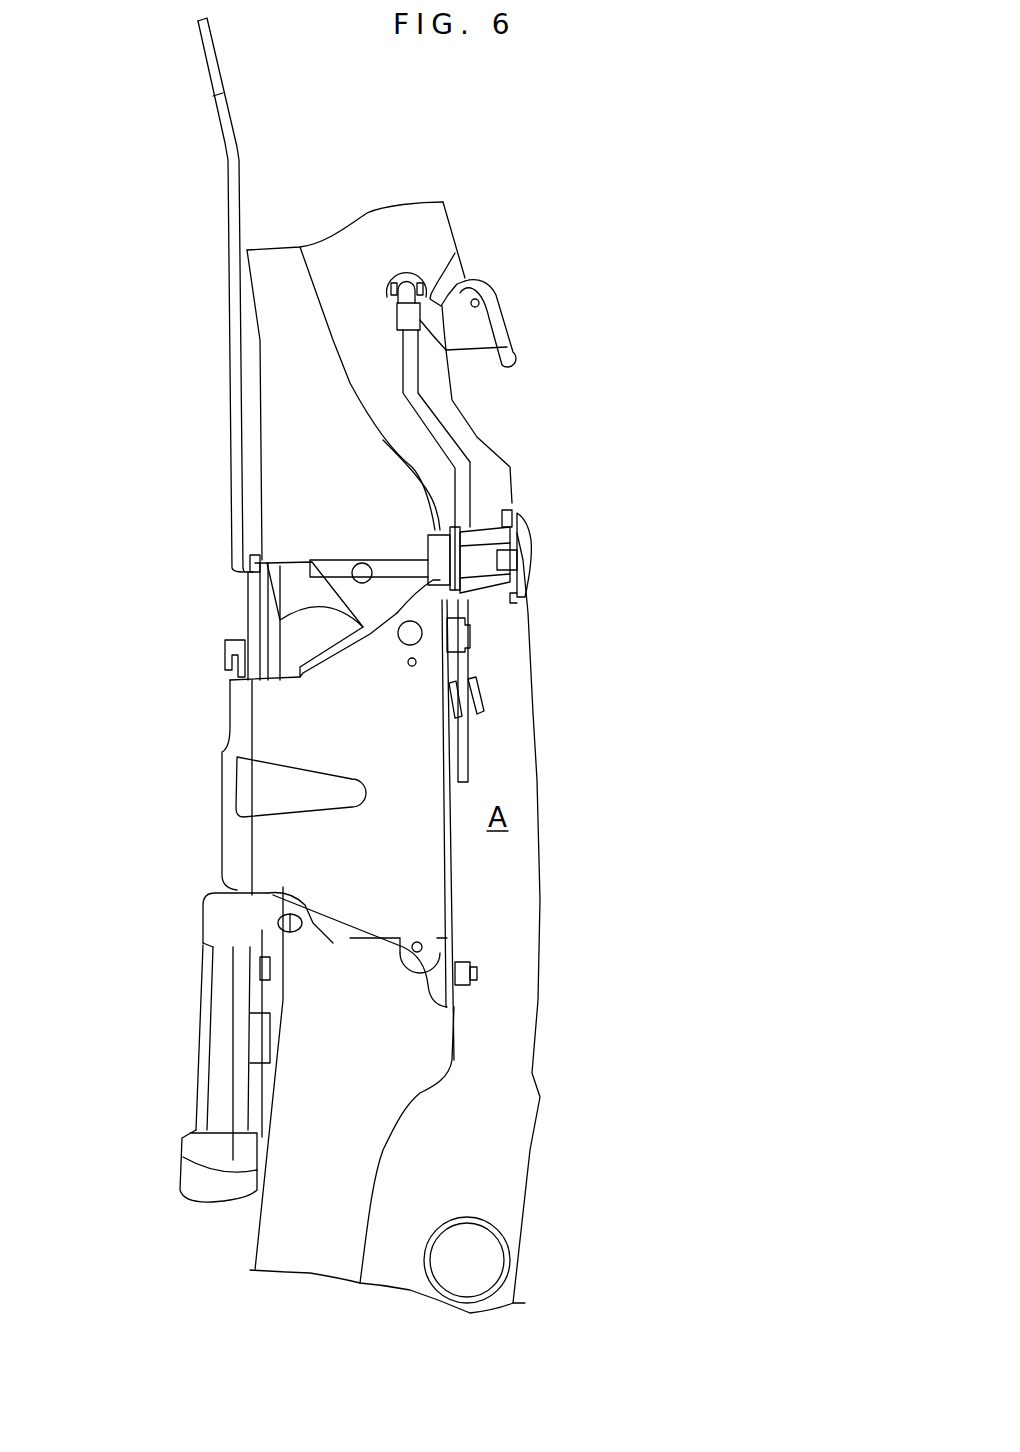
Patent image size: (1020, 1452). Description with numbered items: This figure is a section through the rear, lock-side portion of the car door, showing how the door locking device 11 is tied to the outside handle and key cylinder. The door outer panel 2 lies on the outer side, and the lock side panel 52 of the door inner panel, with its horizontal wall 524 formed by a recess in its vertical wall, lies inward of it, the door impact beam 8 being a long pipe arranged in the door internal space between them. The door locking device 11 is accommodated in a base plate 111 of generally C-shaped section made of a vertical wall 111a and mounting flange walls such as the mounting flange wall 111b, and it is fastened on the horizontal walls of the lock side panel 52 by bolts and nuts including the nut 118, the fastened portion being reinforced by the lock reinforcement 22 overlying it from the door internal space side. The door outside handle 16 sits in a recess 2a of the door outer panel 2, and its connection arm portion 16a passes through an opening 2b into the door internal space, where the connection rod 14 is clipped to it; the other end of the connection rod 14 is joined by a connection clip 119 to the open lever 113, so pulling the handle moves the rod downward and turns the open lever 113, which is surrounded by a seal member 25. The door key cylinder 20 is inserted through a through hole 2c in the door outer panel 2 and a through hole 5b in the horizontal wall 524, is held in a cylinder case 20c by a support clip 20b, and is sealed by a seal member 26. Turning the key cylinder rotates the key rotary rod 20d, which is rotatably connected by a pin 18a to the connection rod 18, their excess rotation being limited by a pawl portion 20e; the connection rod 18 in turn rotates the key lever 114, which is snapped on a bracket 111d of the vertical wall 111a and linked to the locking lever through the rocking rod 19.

The door outer panel 2 is at (541, 803).
The recess 2a is at (487, 440).
The opening 2b is at (507, 347).
The through hole 2c is at (483, 547).
The through hole 5b is at (397, 613).
The door impact beam 8 is at (505, 1258).
The door locking device 11 is at (269, 1064).
The connection rod 14 is at (438, 433).
The door outside handle 16 is at (507, 316).
The connection arm portion 16a is at (455, 253).
The connection rod 18 is at (285, 550).
The pin 18a is at (327, 568).
The rocking rod 19 is at (228, 207).
The door key cylinder 20 is at (554, 542).
The support clip 20b is at (521, 600).
The cylinder case 20c is at (500, 512).
The key rotary rod 20d is at (397, 560).
The pawl portion 20e is at (312, 622).
The lock reinforcement 22 is at (454, 885).
The seal member 25 is at (440, 775).
The seal member 26 is at (400, 453).
The lock side panel 52 is at (412, 1113).
The base plate 111 is at (232, 771).
The vertical wall 111a is at (360, 913).
The mounting flange wall 111b is at (222, 753).
The bracket 111d is at (287, 597).
The open lever 113 is at (483, 707).
The key lever 114 is at (262, 548).
The nut 118 is at (452, 633).
The connection clip 119 is at (477, 683).
The horizontal wall 524 is at (350, 393).